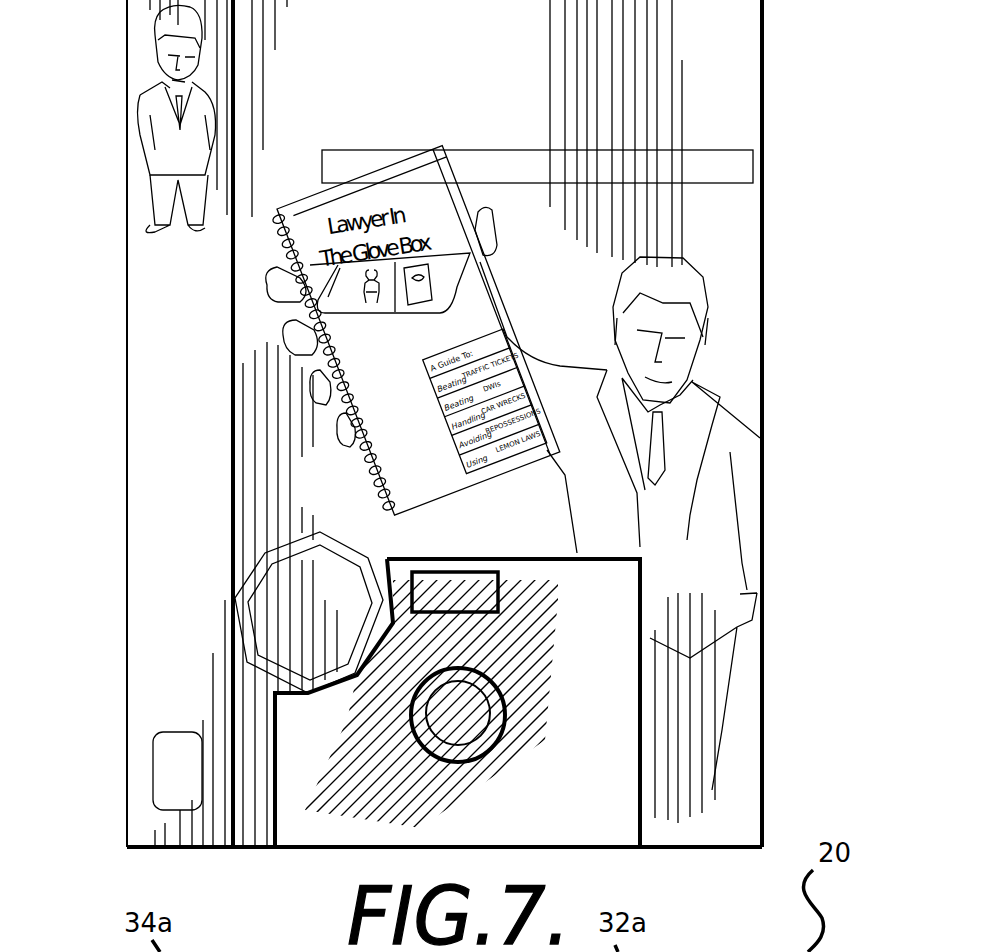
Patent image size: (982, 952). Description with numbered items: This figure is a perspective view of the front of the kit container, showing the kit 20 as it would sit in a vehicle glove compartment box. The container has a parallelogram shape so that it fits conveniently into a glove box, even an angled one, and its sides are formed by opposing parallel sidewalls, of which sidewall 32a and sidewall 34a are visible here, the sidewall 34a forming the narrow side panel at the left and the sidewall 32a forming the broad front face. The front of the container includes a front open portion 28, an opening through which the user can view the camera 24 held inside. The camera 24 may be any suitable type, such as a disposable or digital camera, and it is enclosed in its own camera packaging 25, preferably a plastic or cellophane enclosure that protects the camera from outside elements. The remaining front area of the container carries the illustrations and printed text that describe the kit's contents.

The kit 20 is at (800, 123).
The sidewall 34a is at (150, 410).
The sidewall 32a is at (740, 493).
The camera 24 is at (607, 630).
The camera packaging 25 is at (565, 685).
The front open portion 28 is at (283, 752).